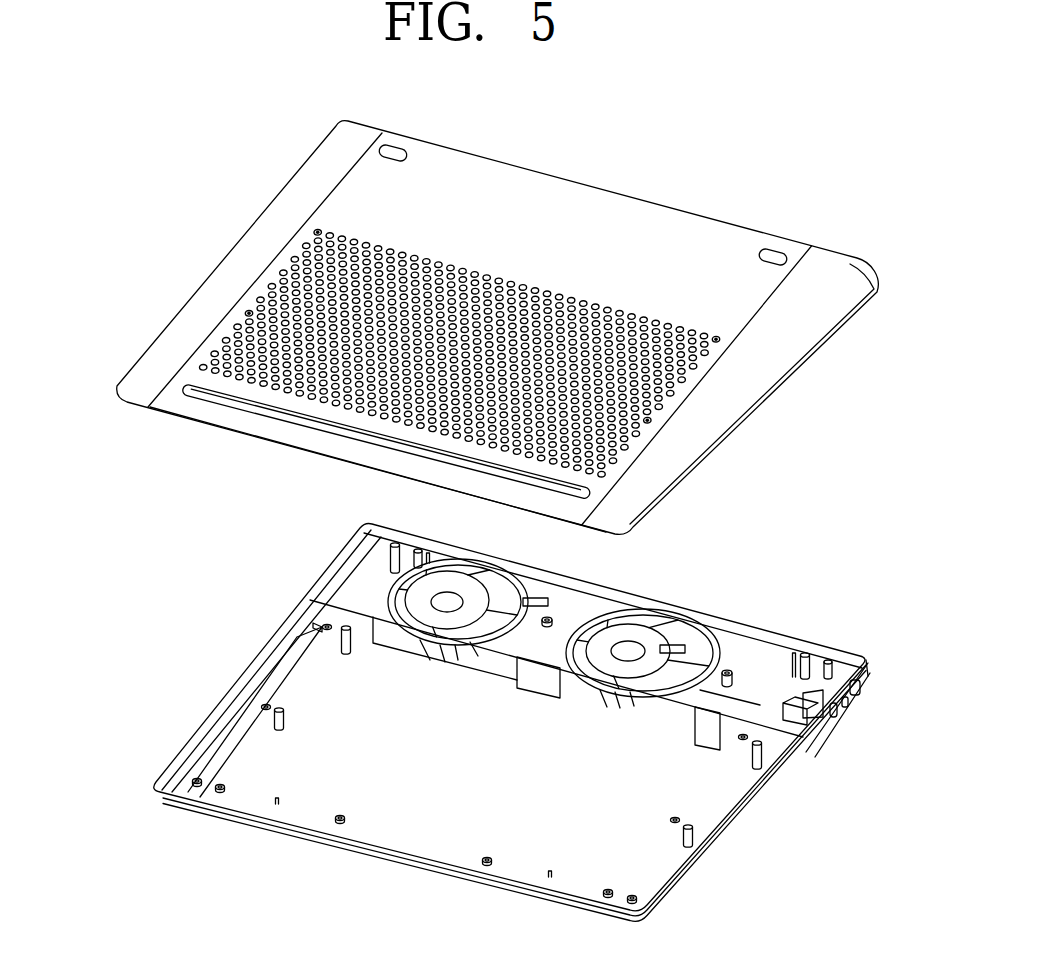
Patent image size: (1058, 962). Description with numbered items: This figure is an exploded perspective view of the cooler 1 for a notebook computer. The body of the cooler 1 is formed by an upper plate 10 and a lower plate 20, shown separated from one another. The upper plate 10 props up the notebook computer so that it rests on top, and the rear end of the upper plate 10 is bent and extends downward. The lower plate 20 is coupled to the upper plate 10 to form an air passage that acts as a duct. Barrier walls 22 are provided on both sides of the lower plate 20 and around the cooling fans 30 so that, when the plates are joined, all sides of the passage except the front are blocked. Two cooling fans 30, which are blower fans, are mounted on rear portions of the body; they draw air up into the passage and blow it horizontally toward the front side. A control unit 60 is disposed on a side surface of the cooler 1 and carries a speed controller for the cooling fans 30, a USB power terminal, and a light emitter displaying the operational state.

The cooler 1 is at (155, 495).
The upper plate 10 is at (300, 190).
The lower plate 20 is at (255, 778).
The barrier walls 22 is at (297, 685).
The cooling fans 30 is at (417, 597).
The control unit 60 is at (861, 717).